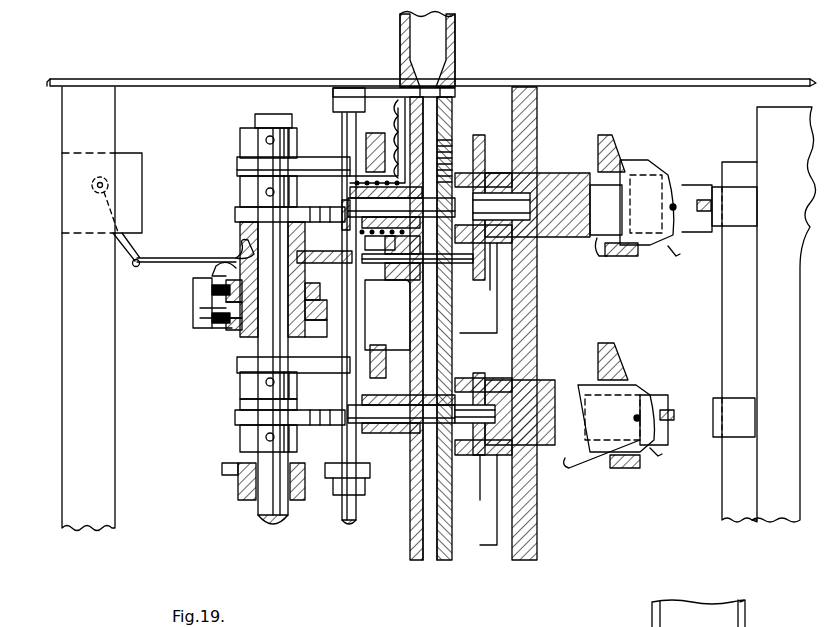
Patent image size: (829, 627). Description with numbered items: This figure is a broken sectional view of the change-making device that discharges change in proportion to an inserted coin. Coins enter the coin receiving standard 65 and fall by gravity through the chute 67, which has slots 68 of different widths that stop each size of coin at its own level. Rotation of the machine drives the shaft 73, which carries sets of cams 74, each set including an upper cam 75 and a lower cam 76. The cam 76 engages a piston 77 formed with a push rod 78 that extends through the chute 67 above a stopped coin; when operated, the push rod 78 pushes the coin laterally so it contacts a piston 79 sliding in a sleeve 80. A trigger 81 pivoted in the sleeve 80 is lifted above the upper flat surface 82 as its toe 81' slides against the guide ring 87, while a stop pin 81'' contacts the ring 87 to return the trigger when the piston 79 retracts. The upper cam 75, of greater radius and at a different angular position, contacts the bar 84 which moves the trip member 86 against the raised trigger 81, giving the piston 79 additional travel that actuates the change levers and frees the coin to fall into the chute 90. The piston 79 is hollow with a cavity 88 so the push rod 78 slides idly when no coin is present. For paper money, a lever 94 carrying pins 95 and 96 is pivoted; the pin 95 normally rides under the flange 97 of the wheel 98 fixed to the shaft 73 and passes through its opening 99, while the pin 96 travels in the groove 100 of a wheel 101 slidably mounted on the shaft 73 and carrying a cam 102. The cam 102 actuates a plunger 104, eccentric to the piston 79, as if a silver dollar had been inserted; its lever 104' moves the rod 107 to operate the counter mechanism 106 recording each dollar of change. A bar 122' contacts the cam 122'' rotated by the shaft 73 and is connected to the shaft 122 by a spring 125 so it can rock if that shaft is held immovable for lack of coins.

The coin receiving standard 65 is at (405, 48).
The chute 67 is at (446, 50).
The slots 68 is at (650, 618).
The shaft 73 is at (256, 512).
The sets of cams 74 is at (248, 408).
The upper cam 75 is at (312, 168).
The cam 76 is at (236, 213).
The piston 77 is at (341, 192).
The push rod 78 is at (445, 200).
The piston 79 is at (480, 135).
The sleeve 80 is at (648, 165).
The trigger 81 is at (641, 306).
The toe 81' is at (601, 367).
The stop pin 81'' is at (664, 363).
The upper flat surface 82 is at (545, 182).
The bar 84 is at (374, 134).
The trip member 86 is at (610, 140).
The guide ring 87 is at (625, 256).
The cavity 88 is at (530, 170).
The chute 90 is at (478, 333).
The lever 94 is at (200, 318).
The pin 95 is at (212, 330).
The pin 96 is at (192, 290).
The flange 97 is at (232, 335).
The wheel 98 is at (317, 327).
The opening 99 is at (318, 304).
The groove 100 is at (210, 268).
The wheel 101 is at (230, 250).
The cam 102 is at (325, 251).
The plunger 104 is at (414, 274).
The lever 104' is at (392, 306).
The counter mechanism 106 is at (140, 178).
The rod 107 is at (183, 255).
The shaft 122 is at (359, 332).
The bar 122' is at (365, 489).
The cam 122'' is at (250, 481).
The spring 125 is at (744, 176).